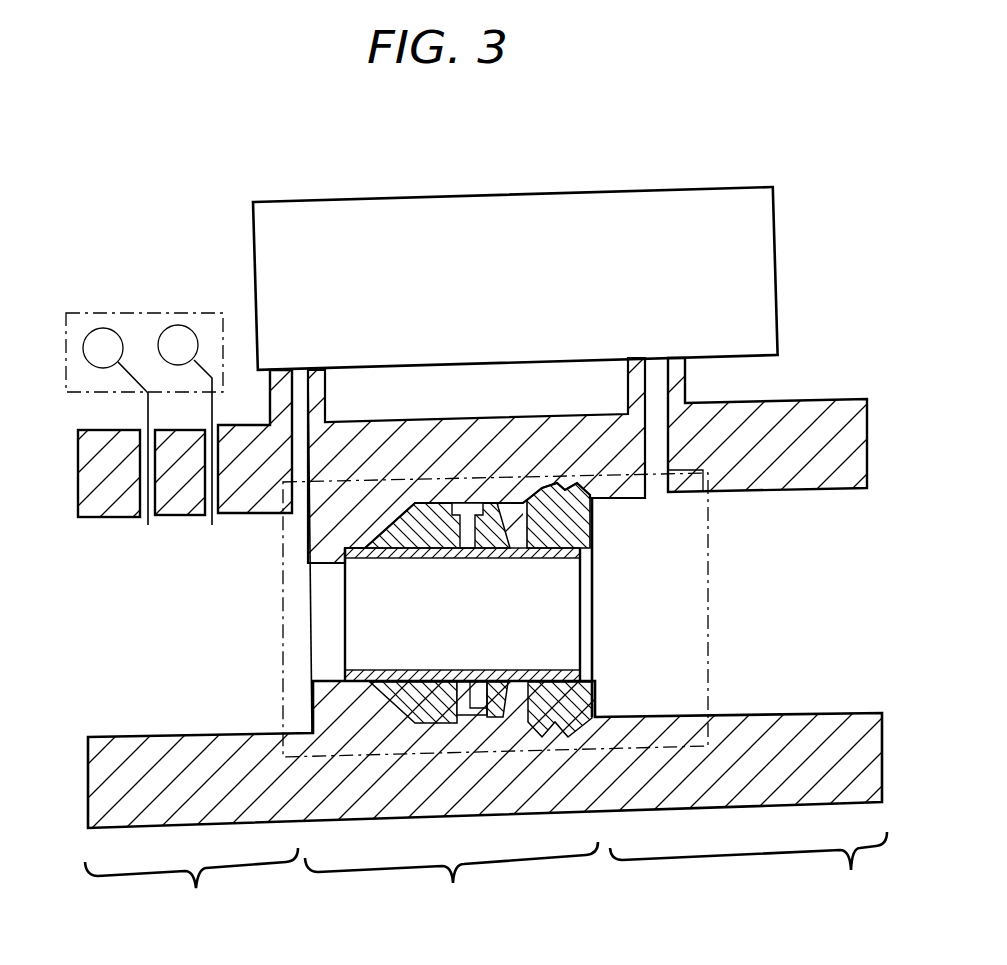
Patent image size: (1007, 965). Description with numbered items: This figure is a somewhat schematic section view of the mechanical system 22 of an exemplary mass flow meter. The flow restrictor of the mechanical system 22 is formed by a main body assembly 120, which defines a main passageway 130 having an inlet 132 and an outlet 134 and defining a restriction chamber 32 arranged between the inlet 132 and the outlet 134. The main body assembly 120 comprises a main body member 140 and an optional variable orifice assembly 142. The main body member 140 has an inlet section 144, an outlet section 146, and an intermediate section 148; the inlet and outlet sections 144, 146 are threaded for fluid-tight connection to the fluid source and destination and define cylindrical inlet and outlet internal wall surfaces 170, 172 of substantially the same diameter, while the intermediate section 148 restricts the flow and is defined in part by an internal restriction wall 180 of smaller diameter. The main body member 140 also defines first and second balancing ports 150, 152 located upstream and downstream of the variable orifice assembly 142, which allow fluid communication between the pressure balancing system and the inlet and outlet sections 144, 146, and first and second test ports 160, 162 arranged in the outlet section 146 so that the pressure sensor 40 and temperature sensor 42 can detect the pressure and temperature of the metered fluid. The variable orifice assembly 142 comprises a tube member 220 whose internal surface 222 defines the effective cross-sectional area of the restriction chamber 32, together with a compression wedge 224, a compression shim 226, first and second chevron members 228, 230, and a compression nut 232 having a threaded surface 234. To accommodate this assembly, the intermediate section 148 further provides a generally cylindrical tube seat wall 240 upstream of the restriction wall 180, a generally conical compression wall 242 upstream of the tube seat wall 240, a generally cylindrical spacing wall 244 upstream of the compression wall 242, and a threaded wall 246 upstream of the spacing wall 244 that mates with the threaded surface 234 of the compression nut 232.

The mechanical system 22 is at (852, 284).
The restriction chamber 32 is at (385, 643).
The pressure sensor 40 is at (110, 330).
The temperature sensor 42 is at (176, 326).
The main body assembly 120 is at (798, 350).
The main passageway 130 is at (732, 670).
The inlet 132 is at (805, 644).
The outlet 134 is at (118, 627).
The main body member 140 is at (745, 406).
The variable orifice assembly 142 is at (712, 575).
The inlet section 144 is at (748, 873).
The outlet section 146 is at (191, 889).
The intermediate section 148 is at (451, 883).
The first balancing port 150 is at (645, 372).
The second balancing port 152 is at (298, 404).
The first test port 160 is at (146, 426).
The second test port 162 is at (216, 427).
The inlet internal wall surface 170 is at (835, 492).
The outlet internal wall surface 172 is at (116, 518).
The internal restriction wall 180 is at (312, 663).
The tube member 220 is at (467, 670).
The internal surface 222 is at (372, 670).
The compression wedge 224 is at (447, 550).
The compression shim 226 is at (513, 560).
The first chevron member 228 is at (527, 560).
The second chevron member 230 is at (540, 560).
The compression nut 232 is at (578, 520).
The threaded surface 234 is at (575, 487).
The tube seat wall 240 is at (345, 560).
The compression wall 242 is at (410, 560).
The spacing wall 244 is at (412, 560).
The threaded wall 246 is at (598, 703).